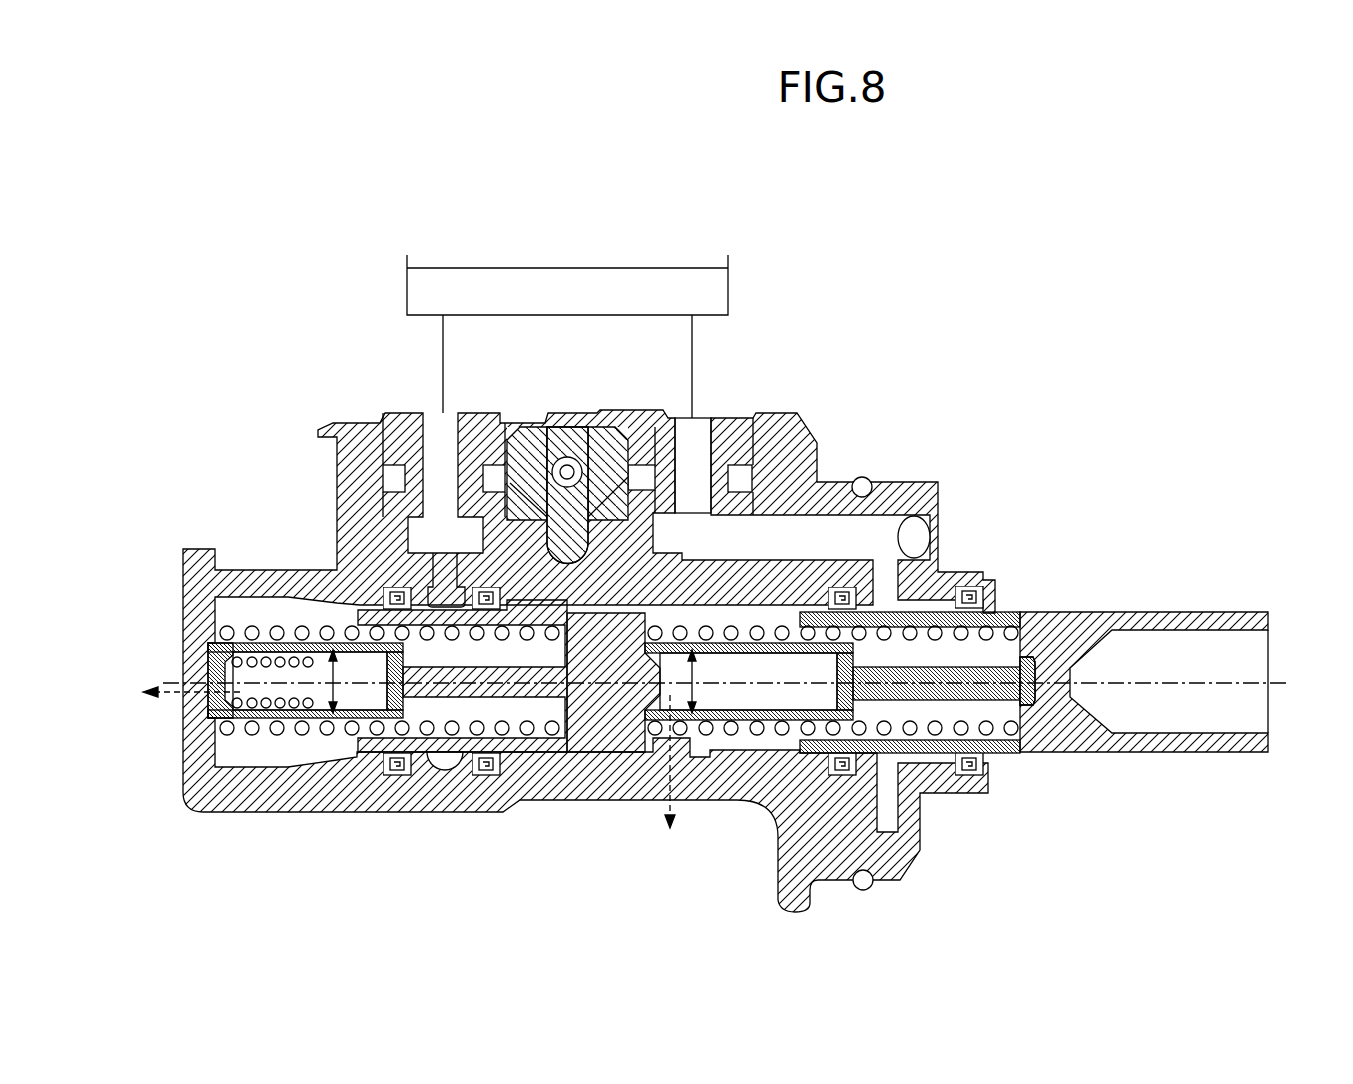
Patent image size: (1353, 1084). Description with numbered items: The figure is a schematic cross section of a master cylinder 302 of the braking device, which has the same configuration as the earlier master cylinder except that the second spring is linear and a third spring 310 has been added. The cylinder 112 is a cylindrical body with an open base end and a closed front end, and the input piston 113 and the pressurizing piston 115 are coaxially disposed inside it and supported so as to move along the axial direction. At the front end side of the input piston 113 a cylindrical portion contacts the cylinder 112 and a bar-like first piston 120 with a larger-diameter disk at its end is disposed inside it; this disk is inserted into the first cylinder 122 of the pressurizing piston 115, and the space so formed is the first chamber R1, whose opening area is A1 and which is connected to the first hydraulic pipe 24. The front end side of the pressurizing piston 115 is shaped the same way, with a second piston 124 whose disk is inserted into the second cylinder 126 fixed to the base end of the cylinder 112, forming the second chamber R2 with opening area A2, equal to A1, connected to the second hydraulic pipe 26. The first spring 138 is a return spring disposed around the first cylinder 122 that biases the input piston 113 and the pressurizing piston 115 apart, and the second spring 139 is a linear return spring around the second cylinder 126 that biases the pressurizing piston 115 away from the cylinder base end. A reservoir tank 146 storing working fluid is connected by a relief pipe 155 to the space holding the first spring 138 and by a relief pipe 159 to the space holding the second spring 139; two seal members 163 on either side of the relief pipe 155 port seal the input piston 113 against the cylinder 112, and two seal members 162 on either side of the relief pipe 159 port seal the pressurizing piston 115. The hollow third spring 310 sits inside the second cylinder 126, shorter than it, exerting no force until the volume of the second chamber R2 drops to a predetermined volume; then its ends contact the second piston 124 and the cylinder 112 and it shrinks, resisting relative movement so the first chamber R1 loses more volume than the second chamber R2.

The master cylinder 302 is at (382, 227).
The reservoir tank 146 is at (640, 283).
The relief pipe 159 is at (435, 412).
The relief pipe 155 is at (700, 428).
The cylinder 112 is at (243, 578).
The seal members 163 is at (970, 600).
The first spring 138 is at (1000, 612).
The input piston 113 is at (1093, 620).
The second hydraulic pipe 26 is at (175, 692).
The first hydraulic pipe 24 is at (670, 776).
The third spring 310 is at (222, 722).
The second chamber R2 is at (322, 702).
The opening area A2 is at (347, 681).
The second cylinder 126 is at (343, 710).
The seal members 162 is at (447, 780).
The second spring 139 is at (503, 757).
The second piston 124 is at (537, 700).
The pressurizing piston 115 is at (598, 745).
The first cylinder 122 is at (713, 752).
The first chamber R1 is at (750, 693).
The opening area A1 is at (707, 681).
The first piston 120 is at (1000, 692).